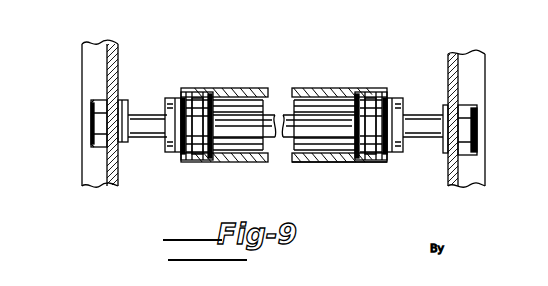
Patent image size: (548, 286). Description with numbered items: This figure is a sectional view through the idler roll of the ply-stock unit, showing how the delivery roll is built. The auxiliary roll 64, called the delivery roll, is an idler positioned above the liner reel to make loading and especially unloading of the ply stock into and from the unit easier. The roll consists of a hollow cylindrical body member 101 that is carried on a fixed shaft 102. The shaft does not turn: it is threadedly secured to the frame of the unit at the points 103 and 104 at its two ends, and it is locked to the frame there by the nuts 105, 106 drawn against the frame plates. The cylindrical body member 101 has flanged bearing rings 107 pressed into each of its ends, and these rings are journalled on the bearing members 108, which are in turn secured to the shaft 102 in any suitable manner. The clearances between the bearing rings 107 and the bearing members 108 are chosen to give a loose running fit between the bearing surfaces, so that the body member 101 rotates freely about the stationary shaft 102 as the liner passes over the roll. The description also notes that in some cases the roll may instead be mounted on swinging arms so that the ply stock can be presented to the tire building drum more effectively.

The auxiliary roll 64 is at (300, 164).
The hollow cylindrical body member 101 is at (252, 88).
The fixed shaft 102 is at (153, 138).
The threaded securing point on frame 103 is at (120, 98).
The threaded securing point on frame 104 is at (446, 106).
The nut 105 is at (95, 102).
The nut 106 is at (124, 100).
The flanged bearing ring 107 is at (197, 93).
The bearing member 108 is at (200, 162).